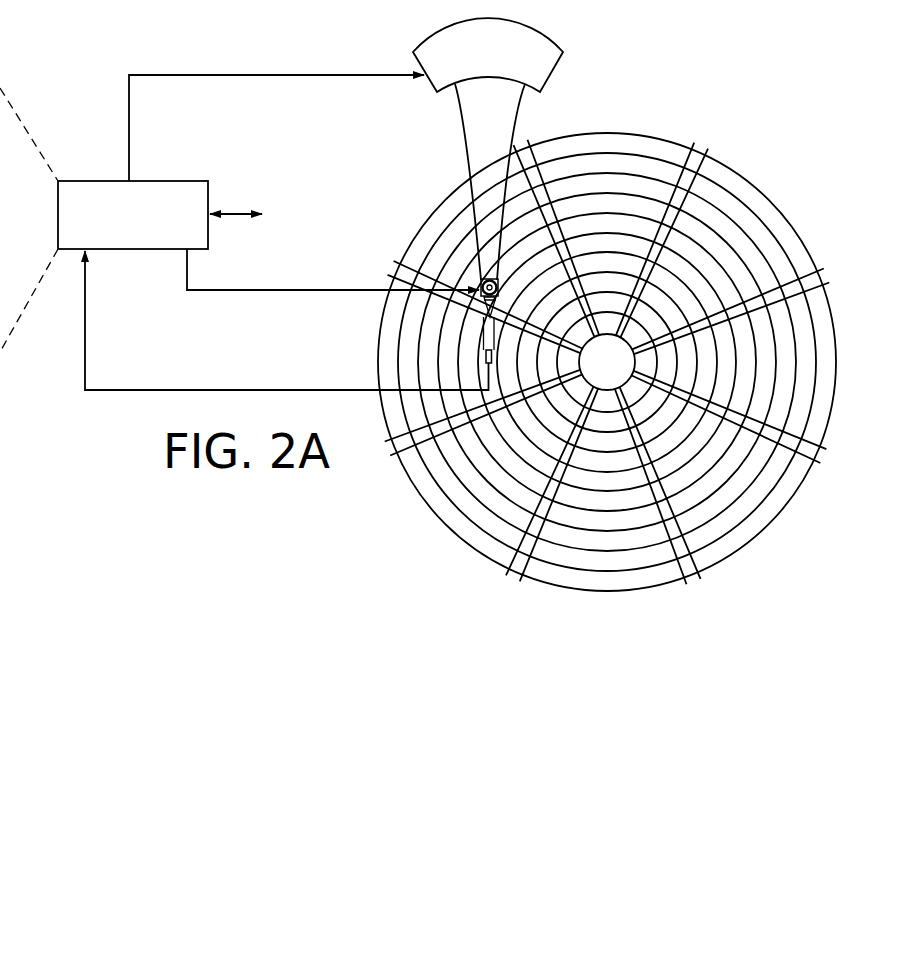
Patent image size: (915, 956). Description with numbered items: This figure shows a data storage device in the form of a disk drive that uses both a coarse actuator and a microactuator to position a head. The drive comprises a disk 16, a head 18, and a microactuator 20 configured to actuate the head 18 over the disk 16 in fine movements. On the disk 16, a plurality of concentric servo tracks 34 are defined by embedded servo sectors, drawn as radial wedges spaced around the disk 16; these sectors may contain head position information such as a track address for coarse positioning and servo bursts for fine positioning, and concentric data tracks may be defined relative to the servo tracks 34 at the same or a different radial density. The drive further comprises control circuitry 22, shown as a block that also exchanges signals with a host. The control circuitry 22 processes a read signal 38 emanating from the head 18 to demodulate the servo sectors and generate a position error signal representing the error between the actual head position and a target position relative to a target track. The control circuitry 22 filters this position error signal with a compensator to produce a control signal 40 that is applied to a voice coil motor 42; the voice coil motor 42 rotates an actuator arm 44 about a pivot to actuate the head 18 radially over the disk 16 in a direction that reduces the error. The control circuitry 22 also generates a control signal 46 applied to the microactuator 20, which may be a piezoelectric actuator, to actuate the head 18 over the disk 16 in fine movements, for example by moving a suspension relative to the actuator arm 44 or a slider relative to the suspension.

The disk 16 is at (767, 184).
The head 18 is at (484, 357).
The microactuator 20 is at (501, 290).
The control circuitry 22 is at (172, 181).
The servo tracks 34 is at (590, 163).
The read signal 38 is at (293, 390).
The control signal 40 is at (129, 112).
The voice coil motor (VCM) 42 is at (432, 92).
The actuator arm 44 is at (469, 142).
The control signal 46 is at (275, 289).